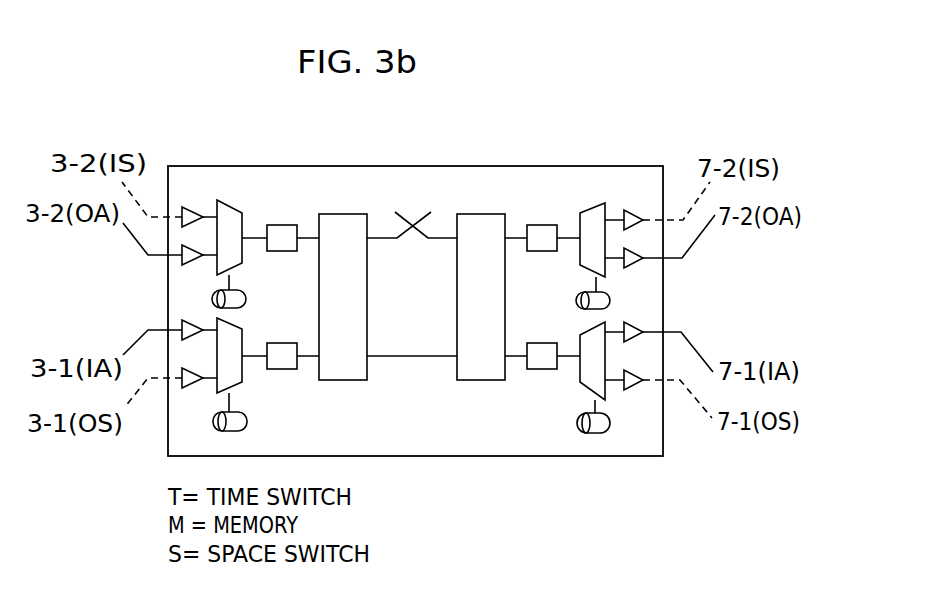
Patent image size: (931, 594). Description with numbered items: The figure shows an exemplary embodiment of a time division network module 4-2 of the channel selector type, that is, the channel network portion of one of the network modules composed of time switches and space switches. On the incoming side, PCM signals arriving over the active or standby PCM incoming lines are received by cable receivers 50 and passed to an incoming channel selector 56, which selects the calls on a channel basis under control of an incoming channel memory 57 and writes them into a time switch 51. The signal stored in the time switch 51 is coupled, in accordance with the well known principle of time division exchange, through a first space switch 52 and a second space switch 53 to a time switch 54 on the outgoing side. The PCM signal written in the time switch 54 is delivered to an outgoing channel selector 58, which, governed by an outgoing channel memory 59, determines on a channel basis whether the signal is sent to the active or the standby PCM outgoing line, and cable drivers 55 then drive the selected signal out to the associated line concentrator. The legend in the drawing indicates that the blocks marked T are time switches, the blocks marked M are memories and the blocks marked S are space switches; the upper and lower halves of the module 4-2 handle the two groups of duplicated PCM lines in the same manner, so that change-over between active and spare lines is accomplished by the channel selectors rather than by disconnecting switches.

The time division network module 4-2 is at (545, 165).
The cable receiver 50 is at (190, 207).
The time switch 51 is at (285, 225).
The space switch 52 is at (333, 214).
The space switch 53 is at (463, 214).
The time switch 54 is at (543, 225).
The cable driver 55 is at (634, 210).
The incoming channel selector 56 is at (230, 211).
The incoming channel memory 57 is at (247, 299).
The outgoing channel selector 58 is at (588, 204).
The outgoing channel memory 59 is at (576, 300).